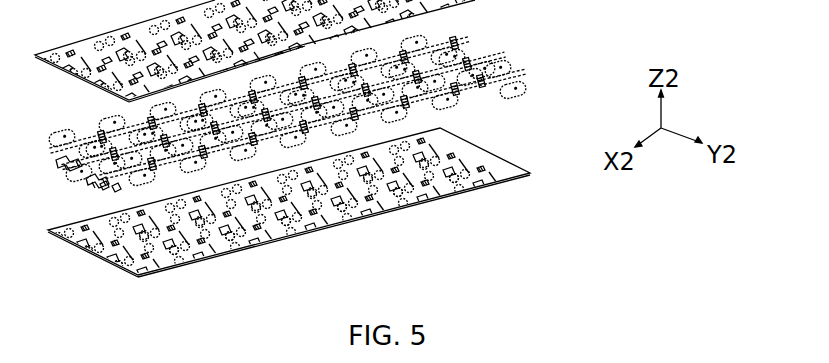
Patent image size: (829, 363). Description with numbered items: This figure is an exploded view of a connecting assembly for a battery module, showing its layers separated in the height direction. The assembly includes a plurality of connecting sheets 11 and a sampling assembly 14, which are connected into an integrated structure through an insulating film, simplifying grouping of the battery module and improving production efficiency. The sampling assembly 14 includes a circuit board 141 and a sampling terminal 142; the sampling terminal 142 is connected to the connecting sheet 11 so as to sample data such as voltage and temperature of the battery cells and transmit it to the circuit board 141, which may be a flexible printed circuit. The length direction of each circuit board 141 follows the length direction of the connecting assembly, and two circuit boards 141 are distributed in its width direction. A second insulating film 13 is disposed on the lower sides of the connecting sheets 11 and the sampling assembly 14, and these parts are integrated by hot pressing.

The connecting sheet 11 is at (310, 109).
The second insulating film 13 is at (495, 150).
The sampling assembly 14 is at (335, 109).
The circuit board 141 is at (503, 65).
The sampling terminal 142 is at (481, 75).